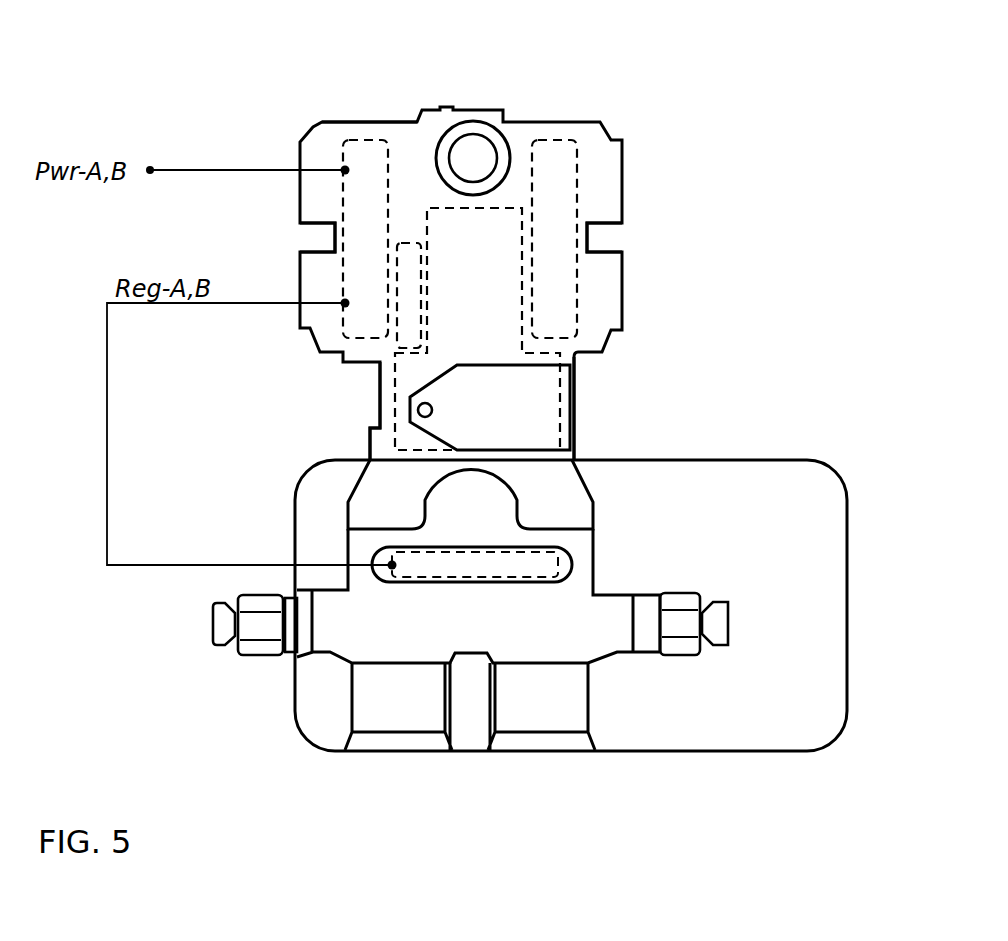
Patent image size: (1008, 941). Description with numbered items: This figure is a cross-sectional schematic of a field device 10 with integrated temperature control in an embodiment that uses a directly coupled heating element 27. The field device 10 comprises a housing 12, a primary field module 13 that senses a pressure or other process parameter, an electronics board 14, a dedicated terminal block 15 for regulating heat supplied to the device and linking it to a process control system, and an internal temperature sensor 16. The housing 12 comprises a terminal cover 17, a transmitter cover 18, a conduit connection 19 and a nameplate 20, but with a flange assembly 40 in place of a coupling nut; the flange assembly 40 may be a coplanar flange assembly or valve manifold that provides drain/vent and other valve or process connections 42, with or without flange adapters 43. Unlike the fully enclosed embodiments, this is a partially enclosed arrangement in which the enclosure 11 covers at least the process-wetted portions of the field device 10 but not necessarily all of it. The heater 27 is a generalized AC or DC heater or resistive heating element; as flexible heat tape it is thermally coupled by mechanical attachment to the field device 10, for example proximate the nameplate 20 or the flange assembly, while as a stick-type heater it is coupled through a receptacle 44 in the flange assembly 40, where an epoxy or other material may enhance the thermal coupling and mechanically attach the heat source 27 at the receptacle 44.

The field device 10 is at (640, 100).
The enclosure 11 is at (855, 462).
The housing 12 is at (341, 122).
The field module 13 is at (392, 400).
The electronics board 14 is at (578, 187).
The terminal block 15 is at (343, 155).
The internal temperature sensor 16 is at (405, 243).
The terminal cover 17 is at (283, 194).
The transmitter cover 18 is at (642, 290).
The conduit connection 19 is at (473, 122).
The nameplate 20 is at (576, 405).
The heating element 27 is at (492, 566).
The flange assembly 40 is at (625, 540).
The process connections 42 is at (212, 646).
The flange adapters 43 is at (414, 712).
The receptacle 44 is at (437, 582).